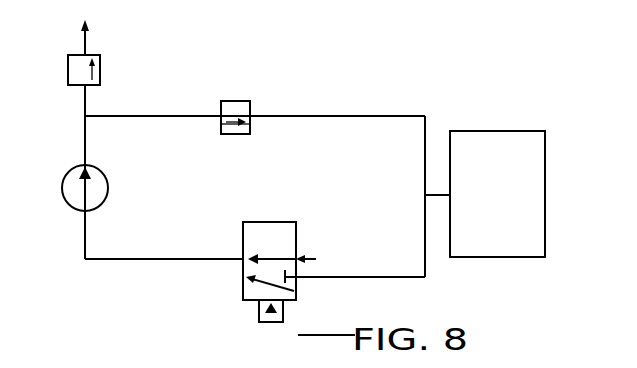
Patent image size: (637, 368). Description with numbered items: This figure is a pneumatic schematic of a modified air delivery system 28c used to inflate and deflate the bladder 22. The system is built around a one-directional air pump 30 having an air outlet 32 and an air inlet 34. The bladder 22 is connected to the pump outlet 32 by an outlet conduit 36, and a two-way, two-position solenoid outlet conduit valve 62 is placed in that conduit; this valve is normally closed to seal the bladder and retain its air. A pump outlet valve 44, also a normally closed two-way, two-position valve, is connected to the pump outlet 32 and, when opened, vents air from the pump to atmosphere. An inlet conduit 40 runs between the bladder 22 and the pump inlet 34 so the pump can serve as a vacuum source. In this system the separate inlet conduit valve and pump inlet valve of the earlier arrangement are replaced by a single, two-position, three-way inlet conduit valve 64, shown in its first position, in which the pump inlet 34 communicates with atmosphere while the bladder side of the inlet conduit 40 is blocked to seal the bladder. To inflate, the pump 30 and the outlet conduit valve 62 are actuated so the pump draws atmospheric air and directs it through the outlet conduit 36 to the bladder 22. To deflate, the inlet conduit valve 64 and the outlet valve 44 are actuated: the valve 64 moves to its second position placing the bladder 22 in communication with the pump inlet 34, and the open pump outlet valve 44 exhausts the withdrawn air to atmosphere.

The bladder 22 is at (493, 131).
The air delivery system 28c is at (313, 94).
The air pump 30 is at (63, 197).
The air outlet 32 is at (85, 137).
The air inlet 34 is at (85, 236).
The outlet conduit 36 is at (375, 116).
The inlet conduit 40 is at (398, 278).
The pump outlet valve 44 is at (103, 69).
The outlet conduit valve 62 is at (235, 101).
The inlet conduit valve 64 is at (285, 222).